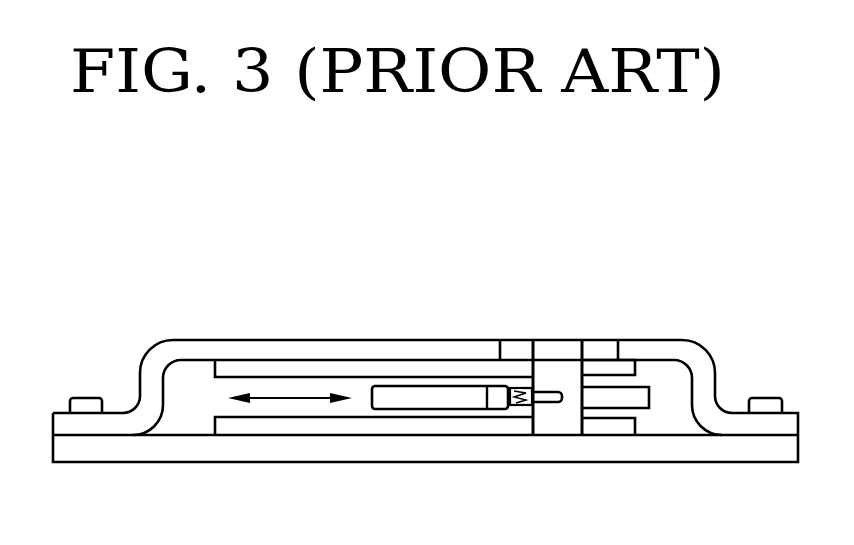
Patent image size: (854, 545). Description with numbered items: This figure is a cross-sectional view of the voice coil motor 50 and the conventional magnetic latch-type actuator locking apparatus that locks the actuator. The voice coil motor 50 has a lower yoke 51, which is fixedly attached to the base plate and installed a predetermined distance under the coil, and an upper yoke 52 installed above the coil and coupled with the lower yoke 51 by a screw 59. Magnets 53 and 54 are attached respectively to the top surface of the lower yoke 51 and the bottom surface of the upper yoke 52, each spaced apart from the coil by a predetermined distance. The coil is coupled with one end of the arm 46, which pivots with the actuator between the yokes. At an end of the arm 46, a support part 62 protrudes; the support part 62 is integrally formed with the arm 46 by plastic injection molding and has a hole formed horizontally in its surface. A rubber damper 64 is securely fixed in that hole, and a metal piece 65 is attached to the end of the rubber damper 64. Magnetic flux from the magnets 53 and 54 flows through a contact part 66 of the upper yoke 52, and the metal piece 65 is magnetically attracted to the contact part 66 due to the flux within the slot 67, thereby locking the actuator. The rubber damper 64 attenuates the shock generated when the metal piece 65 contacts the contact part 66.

The voice coil motor 50 is at (137, 320).
The lower yoke 51 is at (206, 450).
The upper yoke 52 is at (206, 346).
The magnet 53 is at (298, 427).
The magnet 54 is at (302, 370).
The arm 46 is at (385, 392).
The screw 59 is at (88, 400).
The support part 62 is at (497, 402).
The rubber damper 64 is at (517, 388).
The metal piece 65 is at (530, 387).
The contact part 66 is at (566, 350).
The slot 67 is at (559, 393).